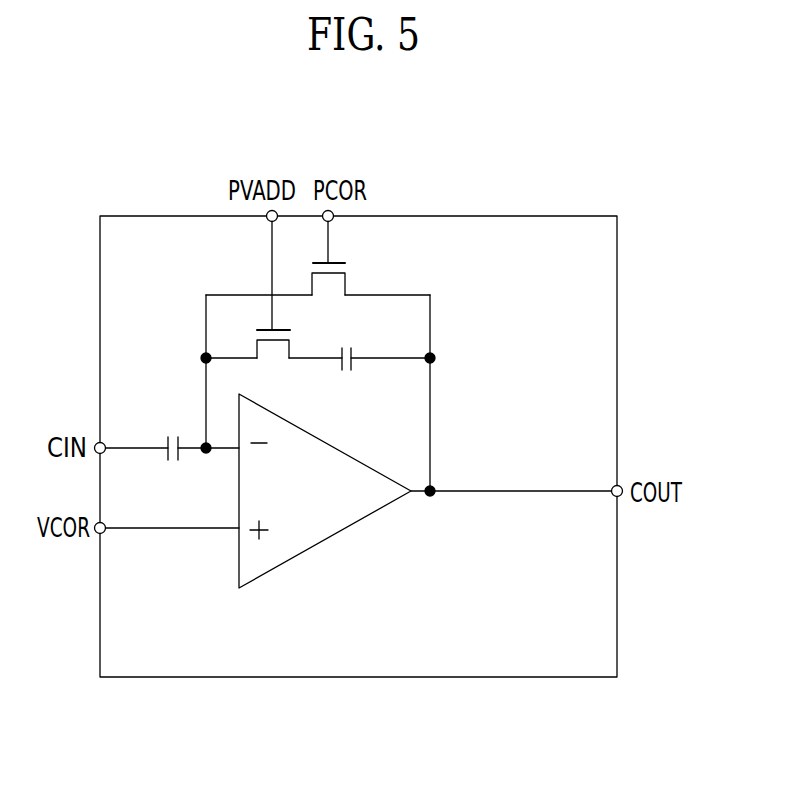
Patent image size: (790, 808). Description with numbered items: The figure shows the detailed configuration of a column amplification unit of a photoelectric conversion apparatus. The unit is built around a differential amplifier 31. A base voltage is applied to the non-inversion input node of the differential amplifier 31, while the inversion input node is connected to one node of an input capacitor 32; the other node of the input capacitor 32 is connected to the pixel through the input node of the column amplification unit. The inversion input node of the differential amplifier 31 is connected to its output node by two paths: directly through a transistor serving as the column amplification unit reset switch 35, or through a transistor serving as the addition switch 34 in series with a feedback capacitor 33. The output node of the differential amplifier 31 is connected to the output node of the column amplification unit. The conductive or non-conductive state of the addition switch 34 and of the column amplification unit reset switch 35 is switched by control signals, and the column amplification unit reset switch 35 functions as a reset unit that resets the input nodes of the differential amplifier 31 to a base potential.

The differential amplifier 31 is at (317, 545).
The input capacitor 32 is at (169, 456).
The feedback capacitor 33 is at (352, 367).
The addition switch 34 is at (289, 345).
The column amplification unit reset switch 35 is at (345, 284).